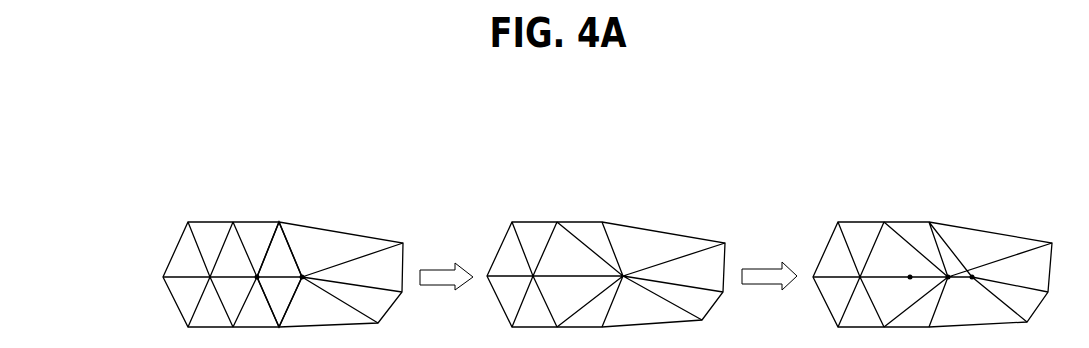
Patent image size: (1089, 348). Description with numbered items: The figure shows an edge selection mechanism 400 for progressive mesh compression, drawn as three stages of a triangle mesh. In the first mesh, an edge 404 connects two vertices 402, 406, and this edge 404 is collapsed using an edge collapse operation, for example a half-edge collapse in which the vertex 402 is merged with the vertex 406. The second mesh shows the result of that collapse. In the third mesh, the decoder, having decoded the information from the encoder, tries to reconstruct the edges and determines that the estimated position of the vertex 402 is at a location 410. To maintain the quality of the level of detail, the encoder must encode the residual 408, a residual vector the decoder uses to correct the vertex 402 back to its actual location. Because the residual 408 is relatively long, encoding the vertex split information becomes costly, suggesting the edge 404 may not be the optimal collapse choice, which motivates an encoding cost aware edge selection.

The edge selection mechanism 400 is at (109, 166).
The vertex 402 is at (256, 274).
The edge 404 is at (274, 270).
The vertex 406 is at (304, 271).
The residual 408 is at (939, 271).
The location 410 is at (974, 272).